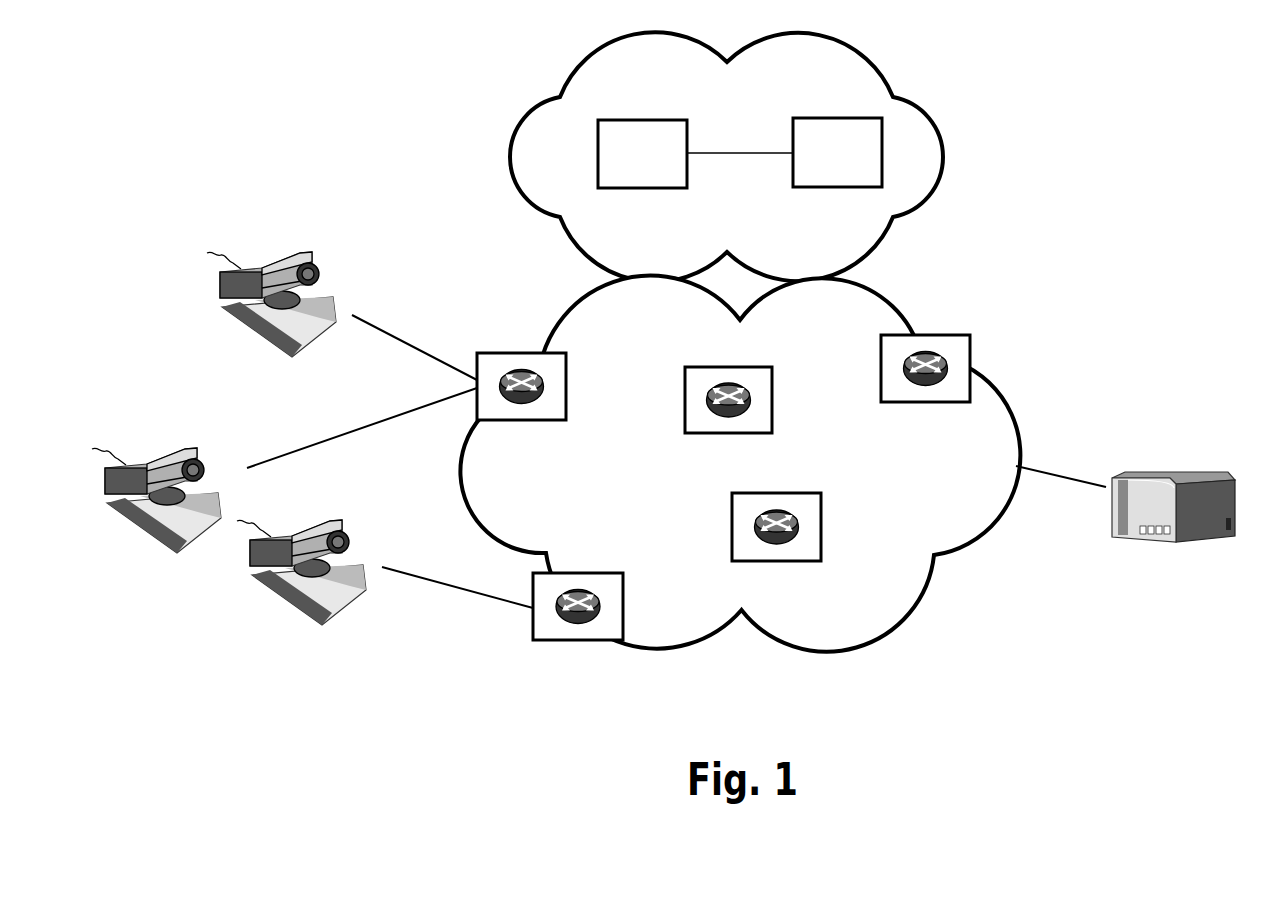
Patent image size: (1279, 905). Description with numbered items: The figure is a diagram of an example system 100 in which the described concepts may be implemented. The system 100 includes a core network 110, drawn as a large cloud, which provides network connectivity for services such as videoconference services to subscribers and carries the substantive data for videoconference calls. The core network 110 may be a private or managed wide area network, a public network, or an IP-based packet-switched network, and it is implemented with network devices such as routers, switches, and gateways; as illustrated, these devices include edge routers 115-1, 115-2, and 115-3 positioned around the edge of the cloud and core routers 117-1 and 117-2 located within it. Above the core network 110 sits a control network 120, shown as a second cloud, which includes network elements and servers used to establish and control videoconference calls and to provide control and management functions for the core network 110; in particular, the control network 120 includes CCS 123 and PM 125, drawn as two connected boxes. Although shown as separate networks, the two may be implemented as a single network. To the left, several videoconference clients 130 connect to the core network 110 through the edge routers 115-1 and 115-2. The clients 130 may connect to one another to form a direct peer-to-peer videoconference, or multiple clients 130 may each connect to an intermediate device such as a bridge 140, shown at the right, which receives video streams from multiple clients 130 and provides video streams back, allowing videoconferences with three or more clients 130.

The system 100 is at (1199, 118).
The core network 110 is at (1010, 415).
The edge router 115-1 is at (566, 366).
The edge router 115-2 is at (623, 580).
The edge router 115-3 is at (970, 337).
The core router 117-1 is at (772, 367).
The core router 117-2 is at (821, 495).
The control network 120 is at (943, 108).
The CCS 123 is at (686, 110).
The PM 125 is at (820, 110).
The videoconference client 130 is at (337, 253).
The bridge 140 is at (1229, 472).